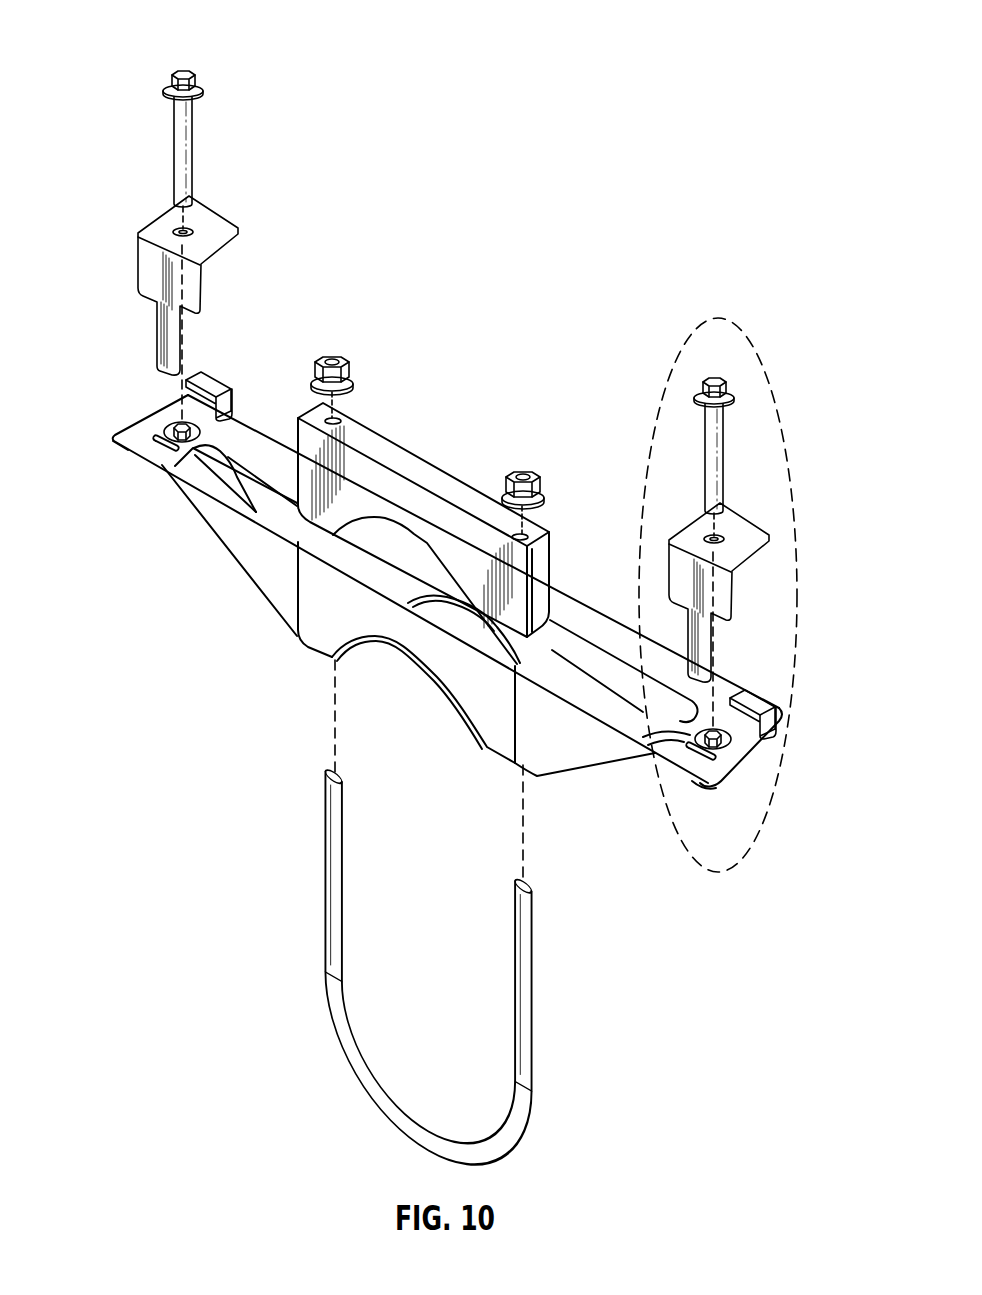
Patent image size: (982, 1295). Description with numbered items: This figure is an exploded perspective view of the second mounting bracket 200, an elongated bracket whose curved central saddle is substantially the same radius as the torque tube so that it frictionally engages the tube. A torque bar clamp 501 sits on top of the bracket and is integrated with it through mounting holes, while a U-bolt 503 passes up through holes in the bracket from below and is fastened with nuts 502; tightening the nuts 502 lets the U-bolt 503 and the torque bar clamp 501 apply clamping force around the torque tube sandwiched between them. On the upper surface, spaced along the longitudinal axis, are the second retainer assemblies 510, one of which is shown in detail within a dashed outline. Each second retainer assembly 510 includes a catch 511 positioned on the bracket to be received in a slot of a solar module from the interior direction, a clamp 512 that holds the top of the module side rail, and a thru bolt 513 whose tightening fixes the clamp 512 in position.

The second mounting bracket 200 is at (118, 55).
The torque bar clamp 501 is at (418, 447).
The nuts 502 is at (350, 355).
The U-bolt 503 is at (345, 1054).
The second retainer assembly 510 is at (718, 318).
The catch 511 is at (763, 719).
The clamp 512 is at (775, 532).
The thru bolt 513 is at (730, 447).